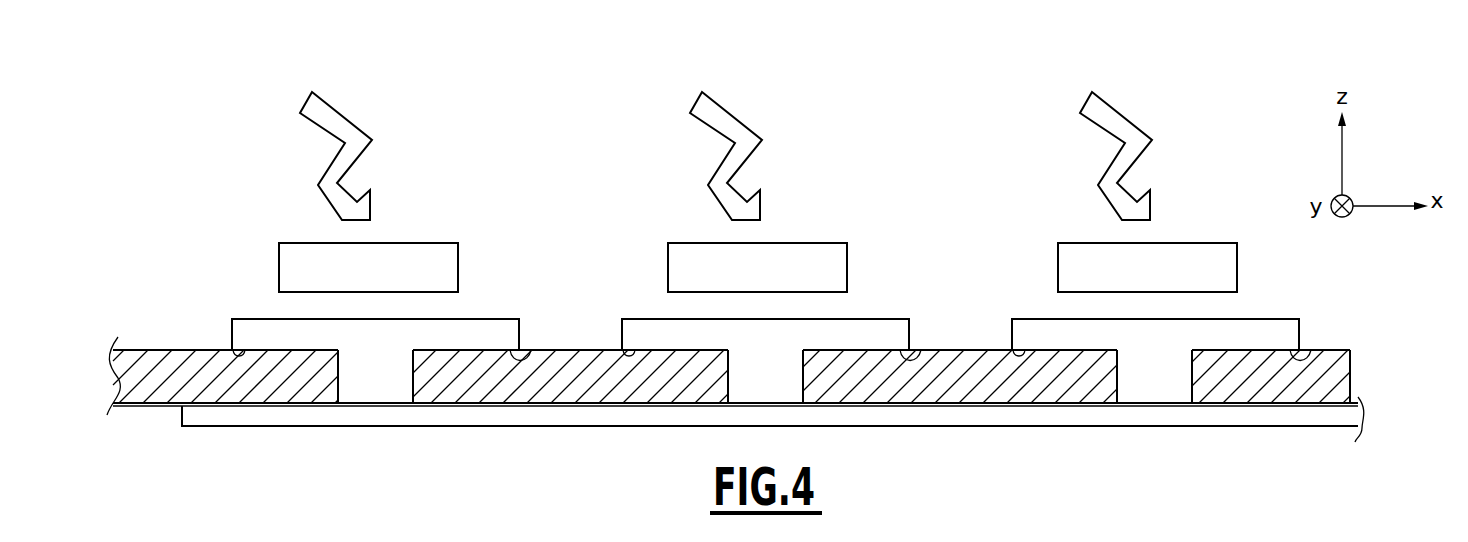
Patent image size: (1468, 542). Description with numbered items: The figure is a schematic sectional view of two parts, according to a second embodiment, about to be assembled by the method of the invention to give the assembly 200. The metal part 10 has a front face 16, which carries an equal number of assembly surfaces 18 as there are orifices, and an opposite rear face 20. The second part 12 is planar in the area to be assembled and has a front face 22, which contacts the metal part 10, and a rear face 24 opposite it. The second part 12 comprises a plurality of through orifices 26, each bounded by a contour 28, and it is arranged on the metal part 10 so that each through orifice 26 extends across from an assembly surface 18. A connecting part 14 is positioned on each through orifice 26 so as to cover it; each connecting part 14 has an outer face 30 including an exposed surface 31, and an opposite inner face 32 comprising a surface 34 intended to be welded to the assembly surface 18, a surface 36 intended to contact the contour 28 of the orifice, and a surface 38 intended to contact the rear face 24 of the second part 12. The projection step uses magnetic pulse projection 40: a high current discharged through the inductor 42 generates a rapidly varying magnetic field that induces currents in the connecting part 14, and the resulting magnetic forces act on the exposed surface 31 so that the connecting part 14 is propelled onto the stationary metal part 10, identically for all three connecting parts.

The metal part 10 is at (1385, 410).
The second part 12 is at (1372, 356).
The connecting part 14 is at (495, 256).
The front face 16 is at (1360, 400).
The assembly surface 18 is at (367, 397).
The rear face 20 is at (1262, 428).
The front face 22 is at (210, 405).
The rear face 24 is at (153, 349).
The through orifice 26 is at (387, 388).
The contour 28 is at (338, 373).
The outer face 30 is at (338, 362).
The exposed surface 31 is at (427, 316).
The inner face 32 is at (528, 362).
The surface 34 is at (232, 350).
The surface 36 is at (236, 350).
The surface 38 is at (453, 350).
The magnetic pulse projection 40 is at (450, 203).
The inductor 42 is at (280, 243).
The assembly 200 is at (164, 539).